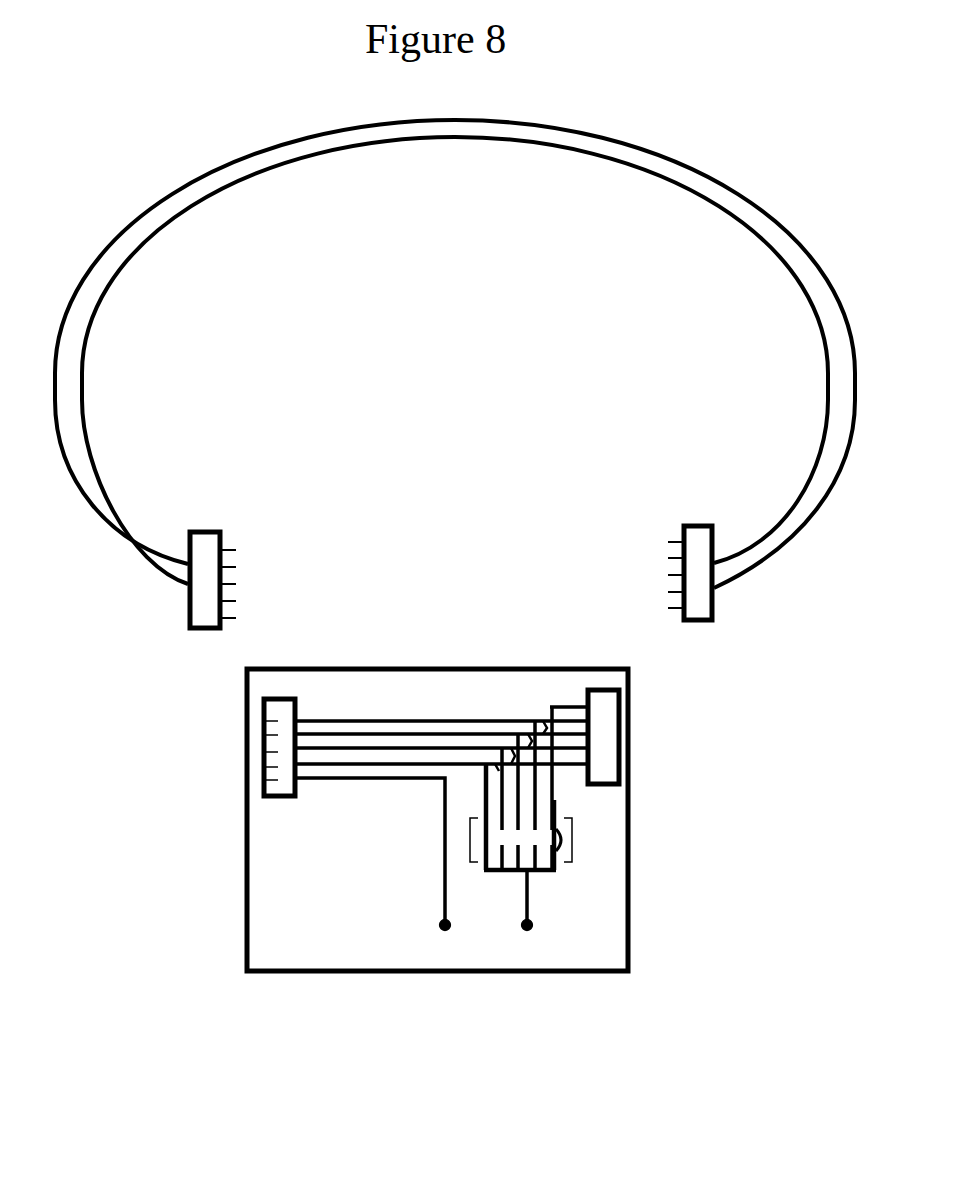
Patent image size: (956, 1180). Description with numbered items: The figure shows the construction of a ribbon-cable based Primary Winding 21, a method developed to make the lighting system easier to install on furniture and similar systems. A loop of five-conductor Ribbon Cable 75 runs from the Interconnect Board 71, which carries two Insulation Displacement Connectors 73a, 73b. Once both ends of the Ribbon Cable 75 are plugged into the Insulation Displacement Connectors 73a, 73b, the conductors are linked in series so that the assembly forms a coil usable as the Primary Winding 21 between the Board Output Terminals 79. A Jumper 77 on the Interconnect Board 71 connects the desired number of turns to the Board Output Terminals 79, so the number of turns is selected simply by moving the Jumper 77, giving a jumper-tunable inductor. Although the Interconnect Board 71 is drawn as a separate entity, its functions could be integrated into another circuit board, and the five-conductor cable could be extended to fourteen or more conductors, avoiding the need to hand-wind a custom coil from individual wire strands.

The Primary Winding 21 is at (455, 374).
The Ribbon Cable 75 is at (455, 360).
The Interconnect Board 71 is at (477, 792).
The Insulation Displacement Connector 73a is at (316, 734).
The Insulation Displacement Connector 73b is at (647, 732).
The Jumper 77 is at (545, 788).
The Board Output Terminals 79 is at (486, 914).